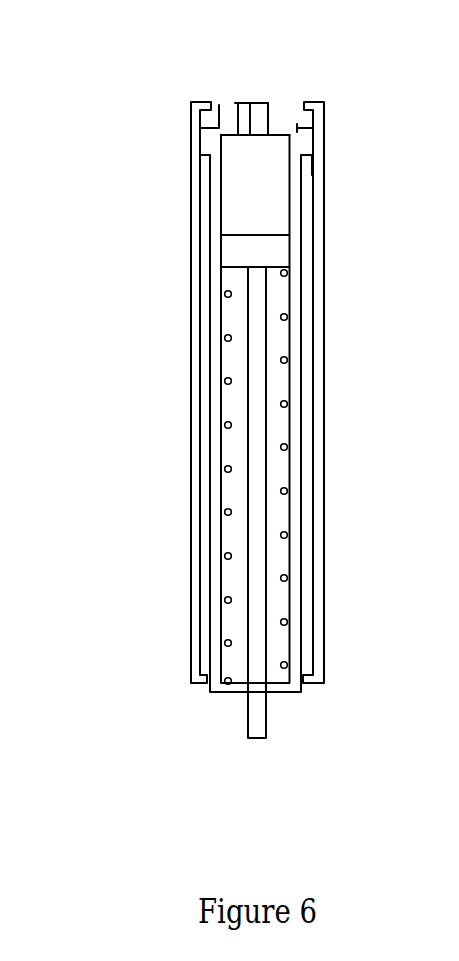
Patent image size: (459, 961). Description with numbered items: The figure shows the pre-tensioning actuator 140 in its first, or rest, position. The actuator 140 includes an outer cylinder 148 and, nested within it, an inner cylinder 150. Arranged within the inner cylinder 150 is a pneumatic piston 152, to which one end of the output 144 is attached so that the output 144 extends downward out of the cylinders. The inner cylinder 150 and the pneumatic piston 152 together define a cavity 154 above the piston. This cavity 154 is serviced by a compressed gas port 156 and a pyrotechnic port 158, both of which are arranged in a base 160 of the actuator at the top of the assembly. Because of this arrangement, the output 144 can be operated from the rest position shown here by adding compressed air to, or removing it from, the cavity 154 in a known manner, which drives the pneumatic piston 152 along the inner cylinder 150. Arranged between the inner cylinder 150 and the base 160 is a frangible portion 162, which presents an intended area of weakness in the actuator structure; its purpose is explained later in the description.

The actuator 140 is at (193, 163).
The output 144 is at (257, 723).
The outer cylinder 148 is at (193, 328).
The inner cylinder 150 is at (297, 214).
The pneumatic piston 152 is at (238, 257).
The cavity 154 is at (268, 189).
The compressed gas port 156 is at (237, 102).
The pyrotechnic port 158 is at (258, 117).
The base 160 is at (280, 117).
The frangible portion 162 is at (216, 128).